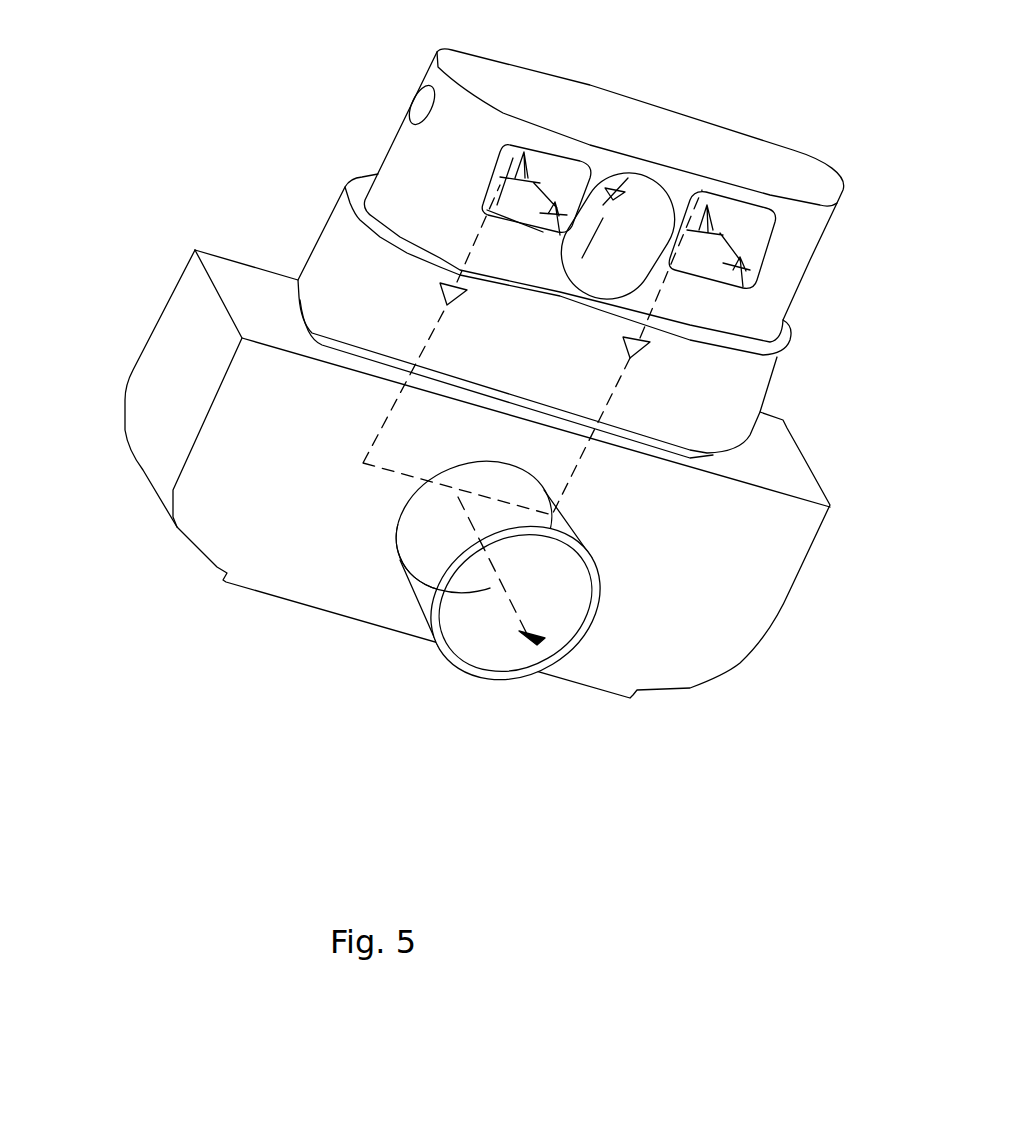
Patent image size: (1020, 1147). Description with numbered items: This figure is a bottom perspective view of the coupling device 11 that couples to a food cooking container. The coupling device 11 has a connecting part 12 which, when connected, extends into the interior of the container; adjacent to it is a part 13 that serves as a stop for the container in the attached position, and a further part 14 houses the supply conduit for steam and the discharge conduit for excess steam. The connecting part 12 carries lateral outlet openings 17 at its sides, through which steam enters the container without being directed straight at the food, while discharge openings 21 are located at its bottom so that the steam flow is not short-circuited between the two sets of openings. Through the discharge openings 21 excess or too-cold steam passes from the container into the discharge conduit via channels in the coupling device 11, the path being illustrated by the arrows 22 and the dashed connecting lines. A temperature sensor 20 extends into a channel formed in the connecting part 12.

The coupling device 11 is at (167, 10).
The connecting part 12 is at (392, 180).
The part serving as stop 13 is at (337, 265).
The part of coupling device 14 is at (177, 318).
The lateral outlet openings 17 is at (418, 108).
The temperature sensor 20 is at (605, 205).
The discharge openings 21 is at (755, 225).
The arrows 22 is at (747, 288).